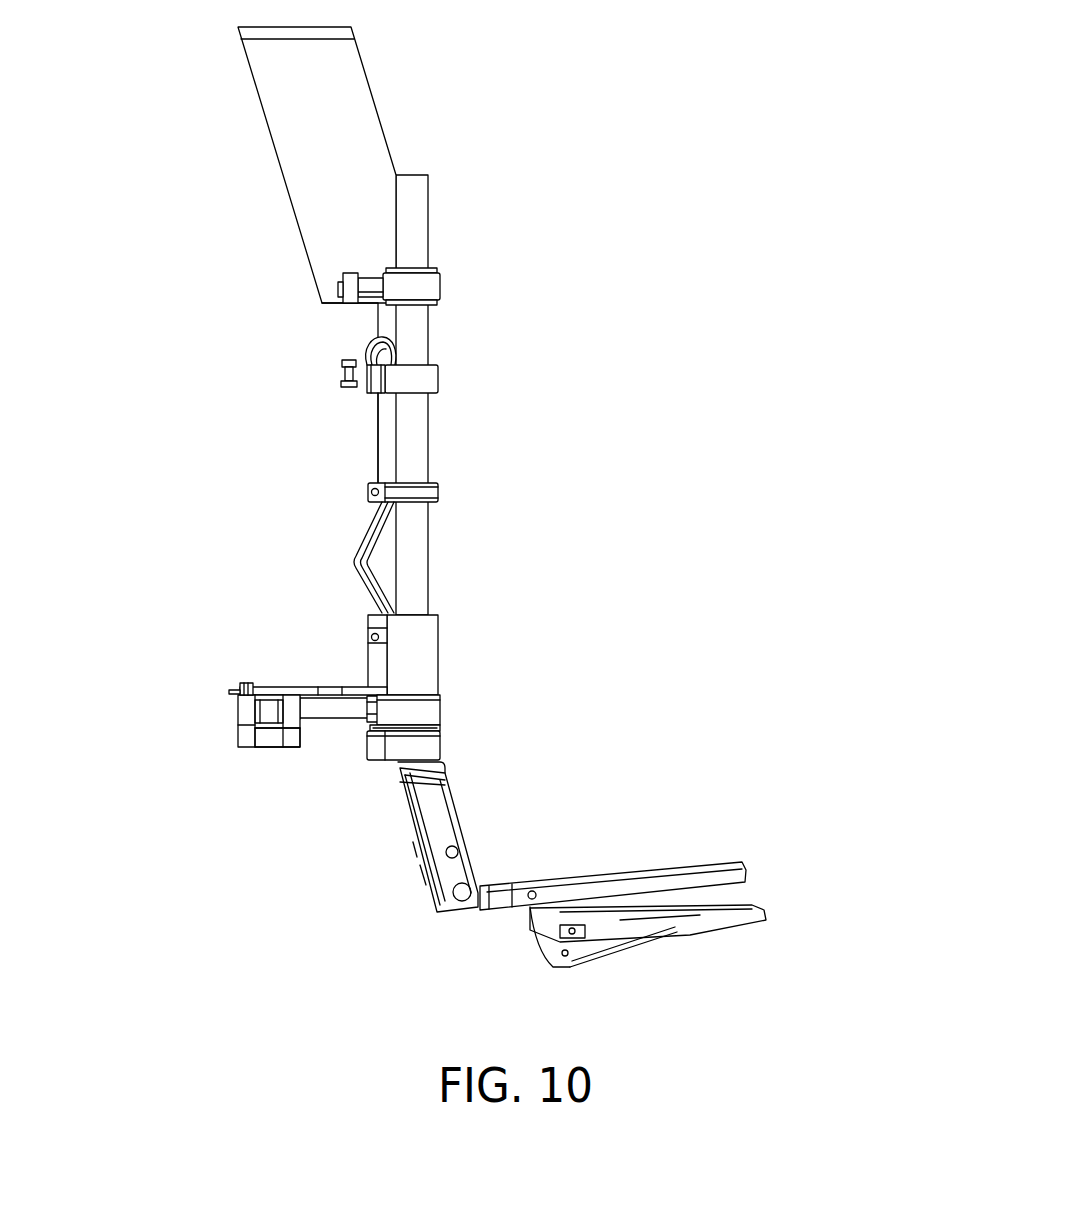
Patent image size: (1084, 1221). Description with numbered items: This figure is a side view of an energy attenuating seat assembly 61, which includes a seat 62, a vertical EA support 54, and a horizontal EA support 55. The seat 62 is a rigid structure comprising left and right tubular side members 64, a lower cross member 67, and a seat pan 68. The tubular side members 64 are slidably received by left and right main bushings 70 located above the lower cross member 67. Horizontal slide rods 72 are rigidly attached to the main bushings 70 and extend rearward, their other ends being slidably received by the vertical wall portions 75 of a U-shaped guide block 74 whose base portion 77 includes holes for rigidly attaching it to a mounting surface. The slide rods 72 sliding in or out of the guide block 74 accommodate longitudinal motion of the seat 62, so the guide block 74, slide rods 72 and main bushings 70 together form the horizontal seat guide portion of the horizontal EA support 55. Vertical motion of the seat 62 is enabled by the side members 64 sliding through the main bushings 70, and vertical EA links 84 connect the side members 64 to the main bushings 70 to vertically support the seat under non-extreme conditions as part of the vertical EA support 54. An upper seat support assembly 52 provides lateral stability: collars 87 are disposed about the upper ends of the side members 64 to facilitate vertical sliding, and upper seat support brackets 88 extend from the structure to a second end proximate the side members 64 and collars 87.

The upper seat support assembly 52 is at (230, 242).
The vertical EA support 54 is at (300, 433).
The horizontal EA support 55 is at (300, 633).
The EA seat assembly 61 is at (730, 242).
The seat 62 is at (640, 758).
The tubular side members 64 is at (430, 343).
The lower cross member 67 is at (438, 748).
The seat pan 68 is at (715, 860).
The main bushings 70 is at (438, 663).
The horizontal slide rods 72 is at (332, 718).
The guide block 74 is at (237, 737).
The vertical wall portions 75 is at (245, 712).
The base portion 77 is at (268, 738).
The vertical EA links 84 is at (357, 552).
The collars 87 is at (443, 288).
The upper seat support brackets 88 is at (258, 100).